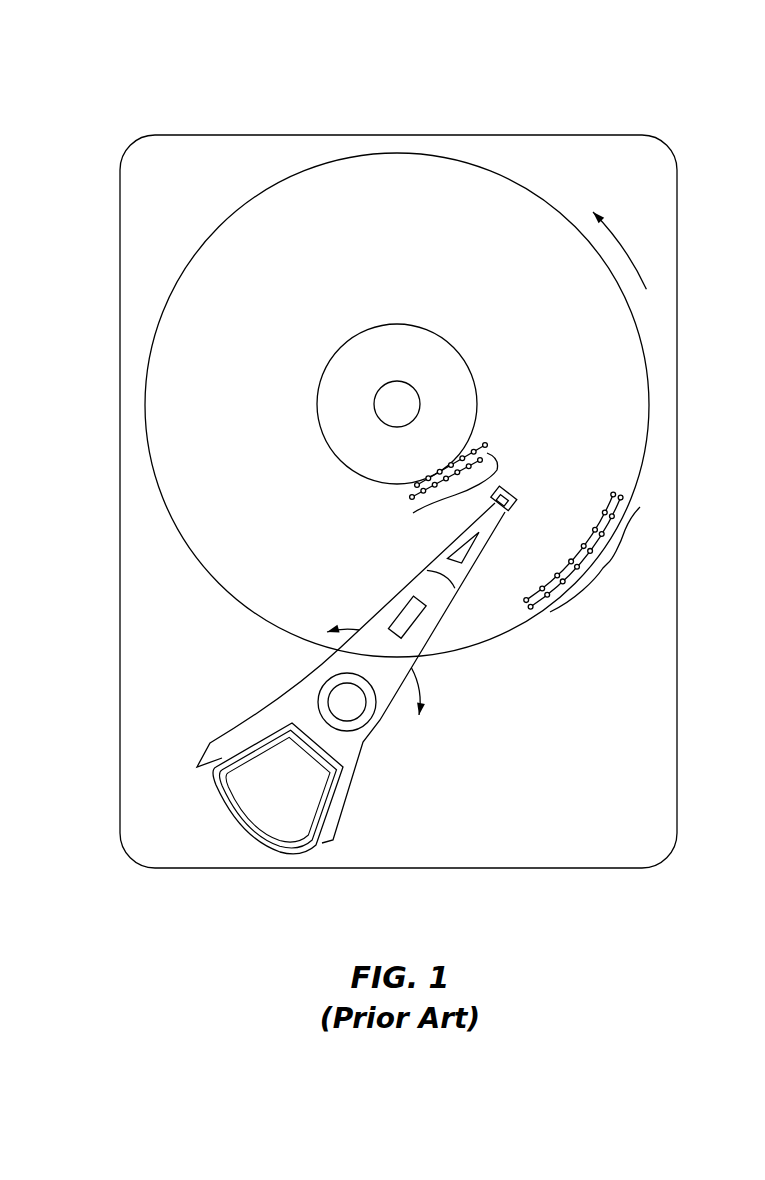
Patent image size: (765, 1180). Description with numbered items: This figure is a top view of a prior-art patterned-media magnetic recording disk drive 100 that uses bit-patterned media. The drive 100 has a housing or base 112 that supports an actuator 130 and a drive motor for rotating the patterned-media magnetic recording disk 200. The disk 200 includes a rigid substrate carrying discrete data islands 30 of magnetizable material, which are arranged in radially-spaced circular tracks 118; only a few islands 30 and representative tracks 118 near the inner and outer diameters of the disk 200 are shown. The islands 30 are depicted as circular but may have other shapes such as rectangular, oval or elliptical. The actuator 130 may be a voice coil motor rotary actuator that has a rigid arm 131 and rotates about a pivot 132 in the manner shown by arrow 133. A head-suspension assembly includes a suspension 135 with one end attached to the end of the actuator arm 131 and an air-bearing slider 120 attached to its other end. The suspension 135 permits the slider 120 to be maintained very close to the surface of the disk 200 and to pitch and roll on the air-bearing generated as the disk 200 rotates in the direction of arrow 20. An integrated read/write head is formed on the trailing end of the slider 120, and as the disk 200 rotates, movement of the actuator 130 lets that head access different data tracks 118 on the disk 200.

The patterned-media magnetic recording disk drive 100 is at (118, 55).
The housing or base 112 is at (610, 135).
The patterned-media magnetic recording disk 200 is at (262, 180).
The arrow 20 is at (622, 238).
The circular tracks 118 is at (402, 478).
The data islands 30 is at (526, 532).
The actuator 130 is at (204, 754).
The air-bearing slider 120 is at (515, 508).
The suspension 135 is at (437, 562).
The rigid arm 131 is at (388, 612).
The arrow 133 is at (422, 680).
The pivot 132 is at (338, 697).